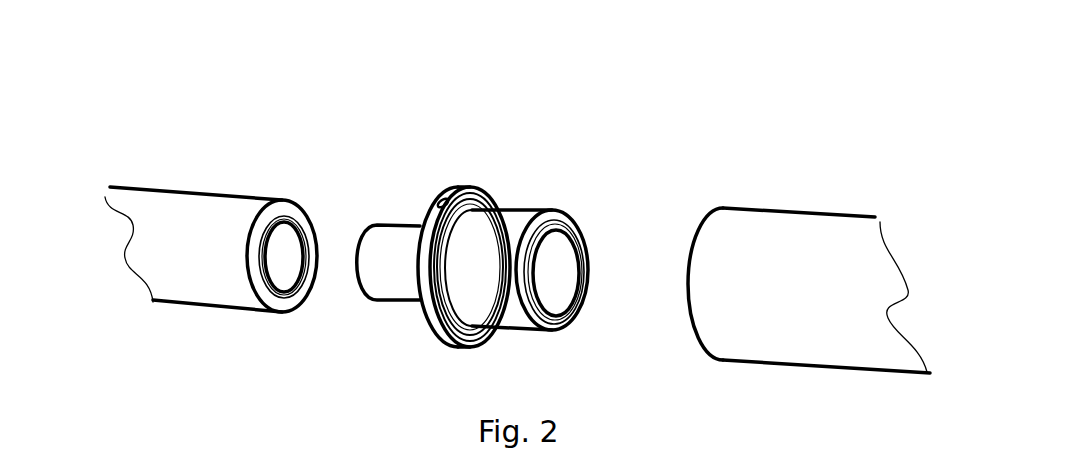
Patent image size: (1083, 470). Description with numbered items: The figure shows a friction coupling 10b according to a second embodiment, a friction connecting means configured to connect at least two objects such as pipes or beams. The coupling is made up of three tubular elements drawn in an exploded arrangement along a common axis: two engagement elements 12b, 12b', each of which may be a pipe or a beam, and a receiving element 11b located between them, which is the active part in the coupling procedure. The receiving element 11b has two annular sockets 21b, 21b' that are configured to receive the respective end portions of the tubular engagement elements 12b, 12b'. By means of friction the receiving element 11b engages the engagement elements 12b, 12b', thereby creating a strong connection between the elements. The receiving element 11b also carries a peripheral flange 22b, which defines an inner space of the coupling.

The friction coupling 10b is at (362, 120).
The receiving element 11b is at (533, 209).
The engagement element 12b is at (809, 247).
The engagement element 12b' is at (211, 209).
The annular socket 21b is at (602, 295).
The annular socket 21b' is at (365, 222).
The peripheral flange 22b is at (449, 197).